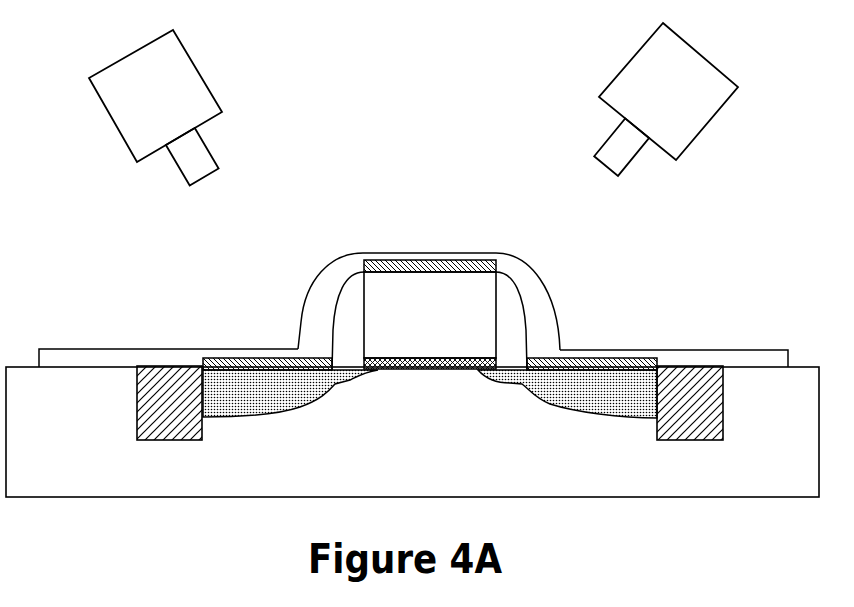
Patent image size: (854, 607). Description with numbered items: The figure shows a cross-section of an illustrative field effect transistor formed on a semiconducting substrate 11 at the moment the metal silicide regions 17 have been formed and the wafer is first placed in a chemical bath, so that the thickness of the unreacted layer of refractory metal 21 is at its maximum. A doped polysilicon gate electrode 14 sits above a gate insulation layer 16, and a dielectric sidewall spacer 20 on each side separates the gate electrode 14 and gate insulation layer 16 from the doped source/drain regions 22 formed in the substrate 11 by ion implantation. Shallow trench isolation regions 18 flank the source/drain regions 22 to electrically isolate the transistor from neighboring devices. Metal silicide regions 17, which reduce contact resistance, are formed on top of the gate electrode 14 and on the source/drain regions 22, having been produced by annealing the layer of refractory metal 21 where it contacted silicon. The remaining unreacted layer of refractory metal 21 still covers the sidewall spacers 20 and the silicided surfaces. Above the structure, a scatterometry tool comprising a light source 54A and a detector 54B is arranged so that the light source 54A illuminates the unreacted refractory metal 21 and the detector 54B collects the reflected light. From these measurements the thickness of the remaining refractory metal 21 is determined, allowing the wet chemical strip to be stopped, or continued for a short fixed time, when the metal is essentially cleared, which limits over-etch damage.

The substrate 11 is at (715, 473).
The gate electrode 14 is at (463, 303).
The gate insulation layer 16 is at (477, 357).
The metal silicide regions 17 is at (243, 360).
The shallow trench isolation regions 18 is at (137, 439).
The dielectric sidewall spacer 20 is at (348, 318).
The layer of refractory metal 21 is at (104, 358).
The source/drain regions 22 is at (222, 388).
The light source 54A is at (178, 90).
The detector 54B is at (643, 91).